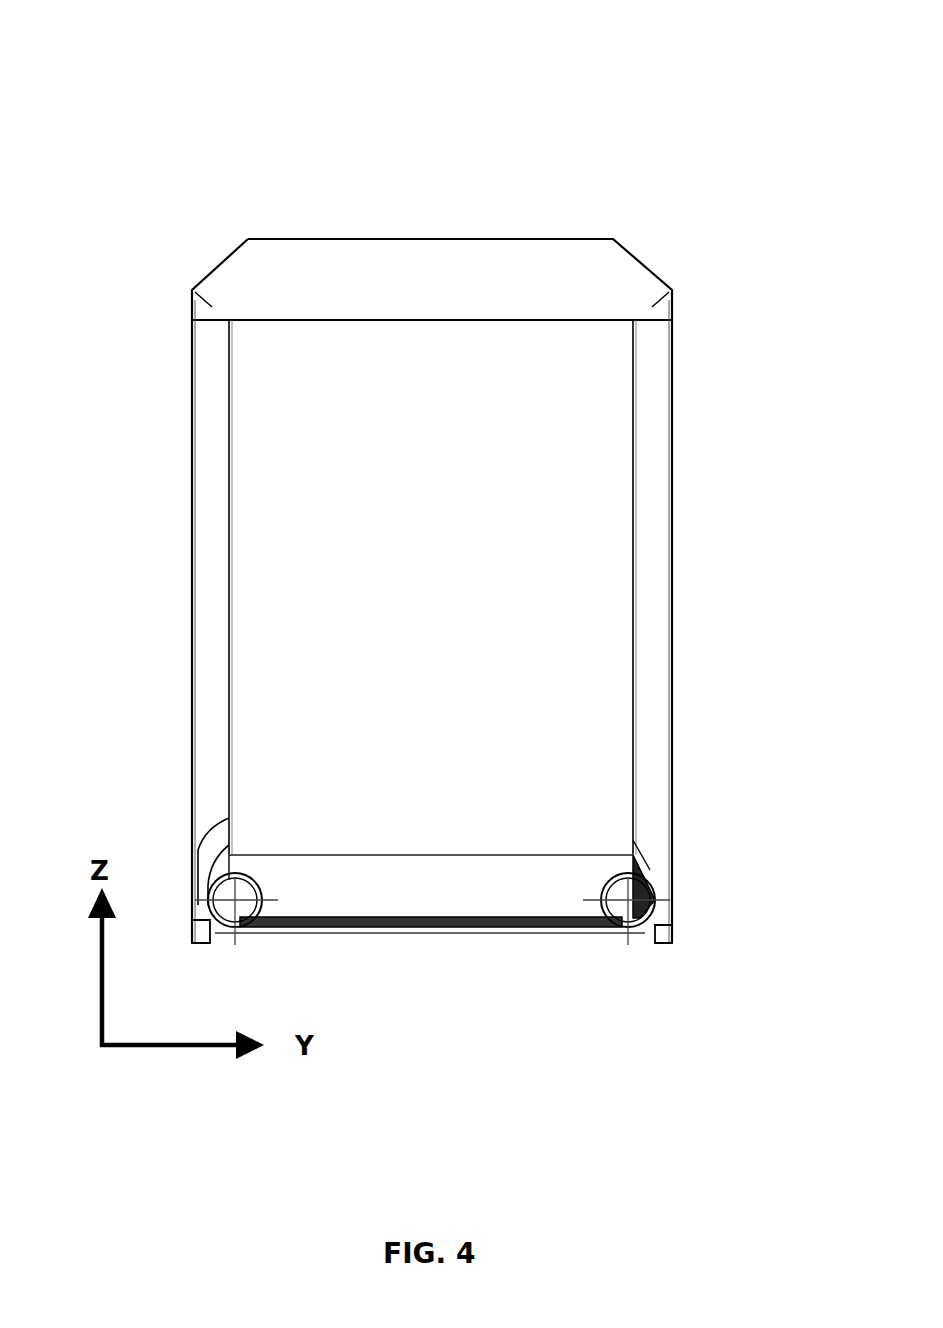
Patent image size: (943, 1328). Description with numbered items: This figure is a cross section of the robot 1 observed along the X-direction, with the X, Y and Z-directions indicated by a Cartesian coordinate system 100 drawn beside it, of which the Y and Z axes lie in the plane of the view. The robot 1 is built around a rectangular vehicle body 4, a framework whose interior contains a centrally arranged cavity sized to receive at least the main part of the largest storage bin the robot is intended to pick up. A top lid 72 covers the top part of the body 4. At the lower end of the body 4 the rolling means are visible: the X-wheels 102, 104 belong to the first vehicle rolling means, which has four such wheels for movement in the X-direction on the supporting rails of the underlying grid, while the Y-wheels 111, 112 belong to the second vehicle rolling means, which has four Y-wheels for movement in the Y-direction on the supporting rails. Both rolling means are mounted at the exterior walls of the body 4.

The robot 1 is at (650, 204).
The vehicle body 4 is at (189, 527).
The top lid 72 is at (423, 238).
The Cartesian coordinate system 100 is at (326, 1032).
The X-wheel 102 is at (675, 890).
The X-wheel 104 is at (192, 890).
The Y-wheel 111 is at (617, 895).
The Y-wheel 112 is at (243, 888).